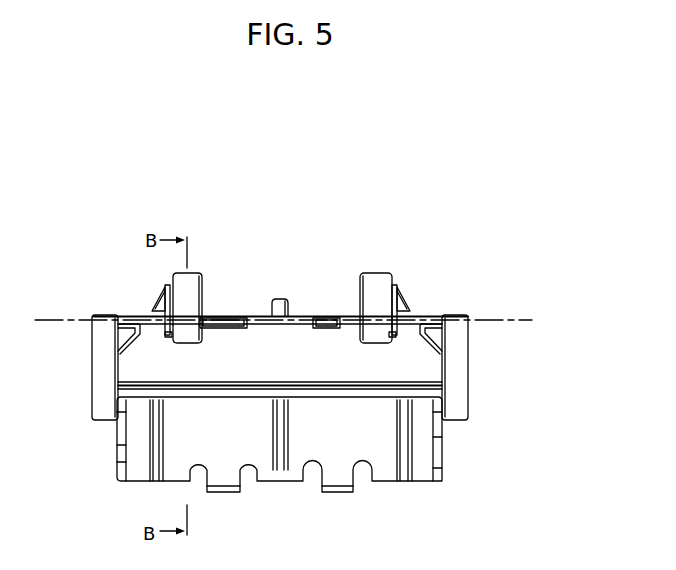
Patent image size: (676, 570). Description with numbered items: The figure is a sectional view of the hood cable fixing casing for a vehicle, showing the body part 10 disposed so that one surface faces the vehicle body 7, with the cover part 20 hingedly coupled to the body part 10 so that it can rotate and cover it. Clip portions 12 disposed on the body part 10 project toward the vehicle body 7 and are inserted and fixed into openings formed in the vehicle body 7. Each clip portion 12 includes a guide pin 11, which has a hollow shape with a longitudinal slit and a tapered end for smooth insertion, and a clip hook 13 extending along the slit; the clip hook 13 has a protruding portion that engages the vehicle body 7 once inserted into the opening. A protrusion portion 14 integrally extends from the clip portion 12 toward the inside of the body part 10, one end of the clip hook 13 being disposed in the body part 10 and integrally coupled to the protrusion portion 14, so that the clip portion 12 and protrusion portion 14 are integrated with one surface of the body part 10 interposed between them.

The vehicle body 7 is at (500, 318).
The body part 10 is at (486, 384).
The guide pin 11 is at (197, 293).
The clip portion 12 is at (347, 266).
The clip hook 13 is at (158, 298).
The protrusion portion 14 is at (183, 337).
The cover part 20 is at (460, 469).